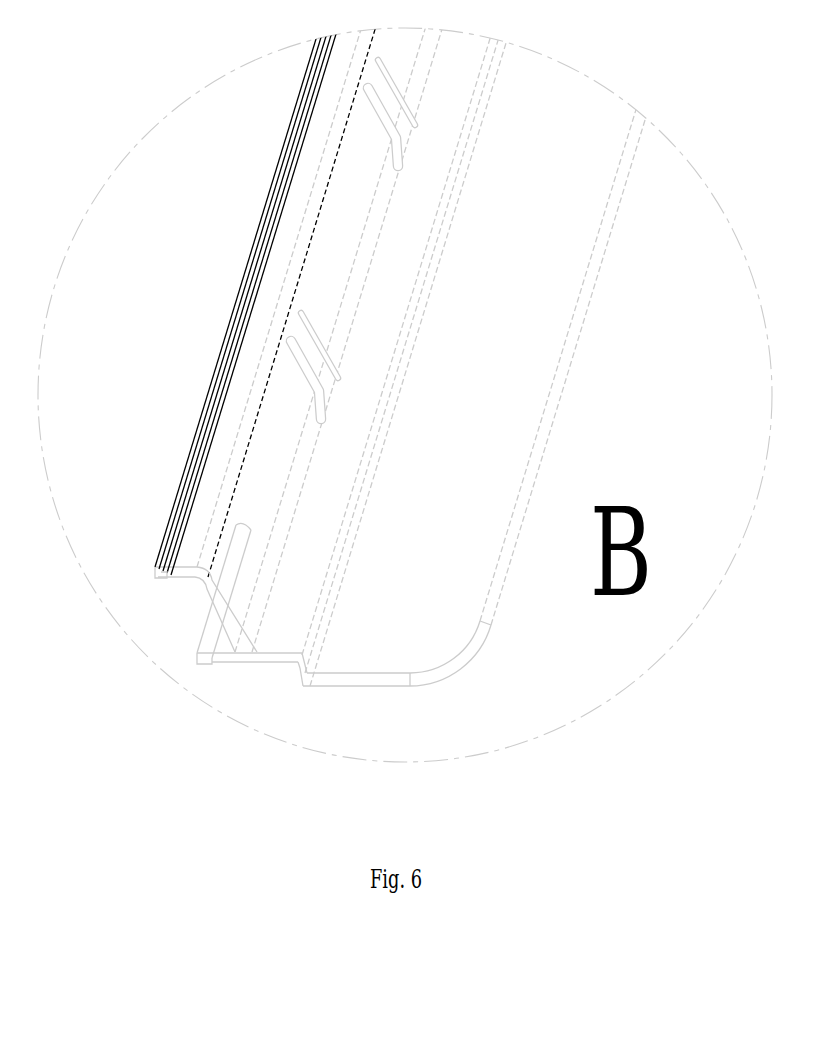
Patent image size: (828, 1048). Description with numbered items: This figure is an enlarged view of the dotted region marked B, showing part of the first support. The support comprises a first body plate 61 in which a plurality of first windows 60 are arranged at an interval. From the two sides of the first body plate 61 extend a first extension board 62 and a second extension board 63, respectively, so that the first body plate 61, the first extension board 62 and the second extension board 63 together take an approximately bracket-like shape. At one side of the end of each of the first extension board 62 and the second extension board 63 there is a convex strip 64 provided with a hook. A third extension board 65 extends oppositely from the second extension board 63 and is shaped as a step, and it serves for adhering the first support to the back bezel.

The first window 60 is at (255, 416).
The first body plate 61 is at (213, 595).
The first extension board 62 is at (182, 570).
The second extension board 63 is at (227, 664).
The convex strip 64 is at (157, 567).
The third extension board 65 is at (300, 672).